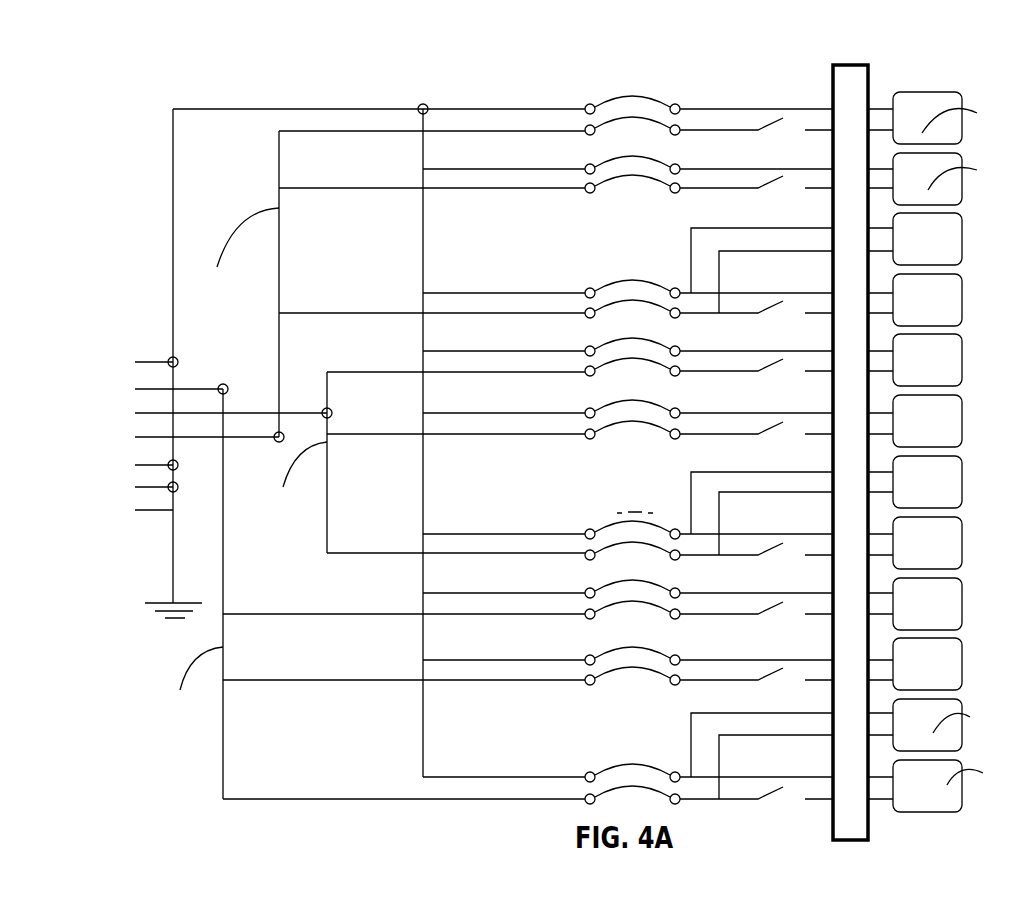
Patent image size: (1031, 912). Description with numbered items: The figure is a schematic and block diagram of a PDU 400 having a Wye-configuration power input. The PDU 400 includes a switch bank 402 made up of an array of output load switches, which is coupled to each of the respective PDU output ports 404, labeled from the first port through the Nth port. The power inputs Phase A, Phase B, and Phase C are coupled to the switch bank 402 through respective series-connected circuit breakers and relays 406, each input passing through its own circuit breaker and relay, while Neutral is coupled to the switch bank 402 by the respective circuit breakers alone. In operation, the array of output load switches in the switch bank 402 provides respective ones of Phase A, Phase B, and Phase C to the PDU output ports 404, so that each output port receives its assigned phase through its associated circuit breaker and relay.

The PDU 400 is at (282, 29).
The switch bank 402 is at (852, 65).
The PDU output ports 404 is at (937, 76).
The series-connected circuit breakers and relays 406 is at (655, 78).